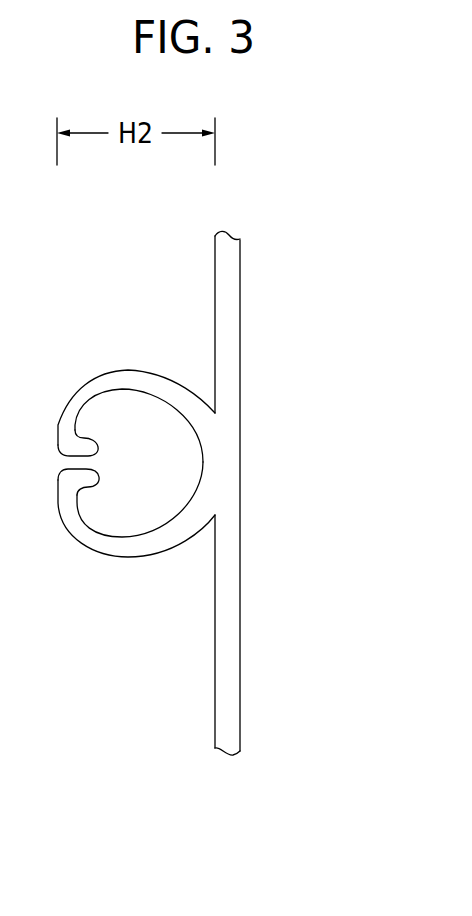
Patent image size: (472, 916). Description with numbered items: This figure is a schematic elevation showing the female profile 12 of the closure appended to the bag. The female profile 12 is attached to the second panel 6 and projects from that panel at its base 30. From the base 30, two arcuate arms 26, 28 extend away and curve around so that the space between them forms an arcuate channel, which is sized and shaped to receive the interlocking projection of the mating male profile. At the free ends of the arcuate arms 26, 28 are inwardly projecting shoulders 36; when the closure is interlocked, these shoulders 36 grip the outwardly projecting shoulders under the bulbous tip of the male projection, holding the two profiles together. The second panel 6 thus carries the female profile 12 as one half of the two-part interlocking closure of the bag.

The second panel 6 is at (240, 648).
The female profile 12 is at (305, 391).
The arcuate arm 26 is at (128, 372).
The arcuate arm 28 is at (122, 555).
The base 30 is at (212, 488).
The inwardly projecting shoulder 36 is at (86, 446).